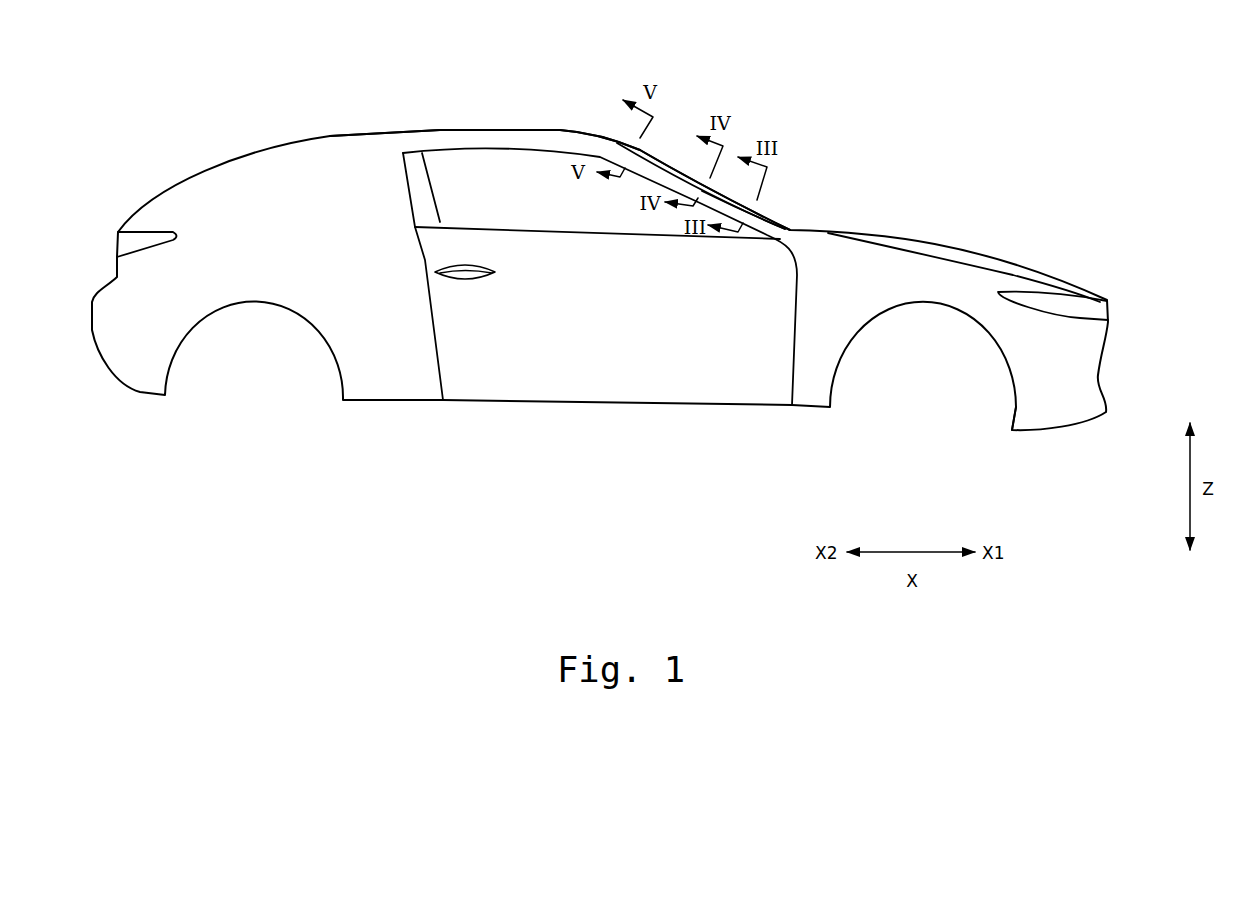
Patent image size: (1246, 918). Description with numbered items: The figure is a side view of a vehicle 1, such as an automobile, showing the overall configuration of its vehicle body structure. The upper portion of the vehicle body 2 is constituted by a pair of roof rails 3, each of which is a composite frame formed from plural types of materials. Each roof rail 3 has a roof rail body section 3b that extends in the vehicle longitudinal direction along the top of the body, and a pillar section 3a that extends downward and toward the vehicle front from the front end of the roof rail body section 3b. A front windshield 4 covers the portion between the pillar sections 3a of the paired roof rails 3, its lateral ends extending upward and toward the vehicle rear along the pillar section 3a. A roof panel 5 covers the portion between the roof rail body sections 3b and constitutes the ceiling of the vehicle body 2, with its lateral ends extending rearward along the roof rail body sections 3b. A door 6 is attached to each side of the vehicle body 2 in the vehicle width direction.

The vehicle 1 is at (965, 167).
The vehicle body 2 is at (1078, 348).
The roof rail 3 is at (559, 130).
The pillar section 3a is at (790, 223).
The roof rail body section 3b is at (538, 128).
The front windshield 4 is at (767, 217).
The roof panel 5 is at (500, 127).
The door 6 is at (623, 382).